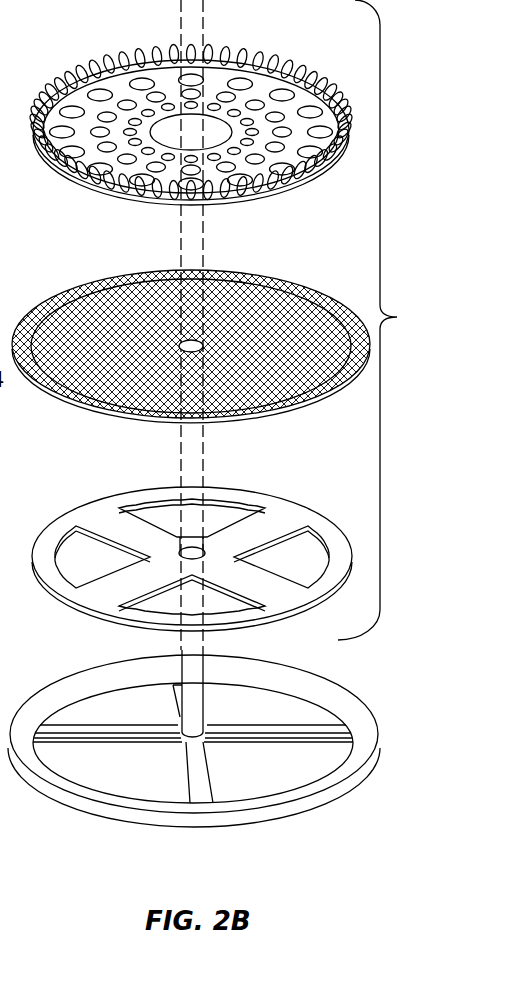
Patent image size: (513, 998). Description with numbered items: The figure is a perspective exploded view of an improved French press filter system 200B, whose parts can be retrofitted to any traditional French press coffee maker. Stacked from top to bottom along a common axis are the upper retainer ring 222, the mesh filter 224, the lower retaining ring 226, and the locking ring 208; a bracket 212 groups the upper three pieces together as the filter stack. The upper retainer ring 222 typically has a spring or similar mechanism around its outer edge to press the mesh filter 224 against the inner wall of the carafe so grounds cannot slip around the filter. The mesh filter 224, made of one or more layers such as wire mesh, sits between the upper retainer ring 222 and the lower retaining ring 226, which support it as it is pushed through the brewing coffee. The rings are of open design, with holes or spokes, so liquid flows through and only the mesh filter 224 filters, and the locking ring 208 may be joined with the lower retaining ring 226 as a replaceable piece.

The improved French press filter system 200B is at (298, 832).
The filter stack 212 is at (390, 320).
The upper retainer ring 222 is at (261, 45).
The mesh filter 224 is at (260, 272).
The lower retaining ring 226 is at (261, 487).
The locking ring 208 is at (328, 675).